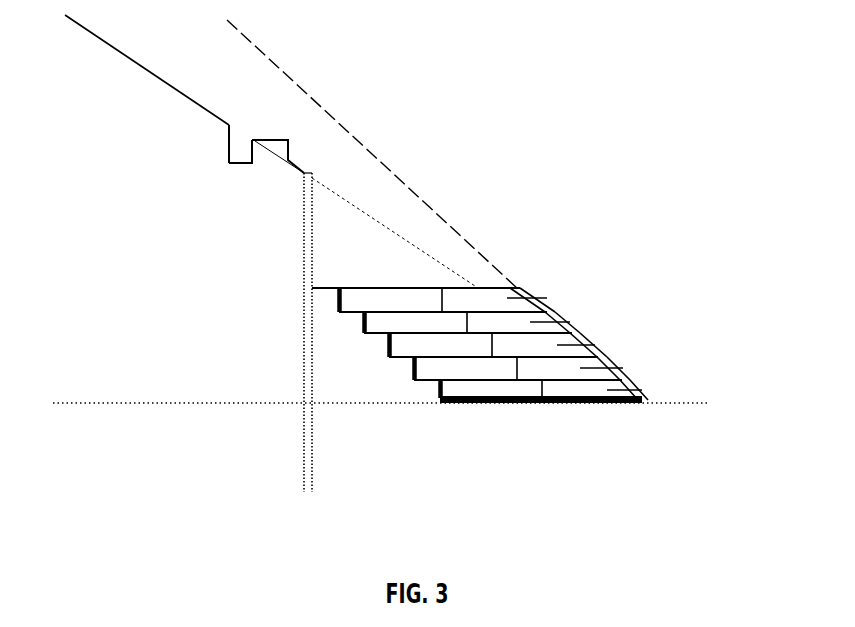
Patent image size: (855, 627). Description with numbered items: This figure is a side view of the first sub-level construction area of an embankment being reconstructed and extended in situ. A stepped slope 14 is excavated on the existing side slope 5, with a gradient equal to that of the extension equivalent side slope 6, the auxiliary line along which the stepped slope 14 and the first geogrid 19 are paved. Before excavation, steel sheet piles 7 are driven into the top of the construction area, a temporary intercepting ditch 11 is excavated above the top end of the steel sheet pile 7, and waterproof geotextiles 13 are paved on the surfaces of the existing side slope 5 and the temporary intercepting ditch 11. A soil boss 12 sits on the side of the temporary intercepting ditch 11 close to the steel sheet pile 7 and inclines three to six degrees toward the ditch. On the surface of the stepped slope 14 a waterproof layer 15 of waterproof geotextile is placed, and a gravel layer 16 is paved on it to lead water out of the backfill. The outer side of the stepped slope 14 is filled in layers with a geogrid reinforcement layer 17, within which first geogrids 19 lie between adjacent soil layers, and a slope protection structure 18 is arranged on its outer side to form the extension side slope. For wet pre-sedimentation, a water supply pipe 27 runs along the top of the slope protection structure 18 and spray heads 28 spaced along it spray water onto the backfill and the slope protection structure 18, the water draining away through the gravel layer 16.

The existing side slope 5 is at (152, 83).
The extension equivalent side slope 6 is at (300, 90).
The steel sheet pile 7 is at (305, 217).
The temporary intercepting ditch 11 is at (228, 165).
The soil boss 12 is at (278, 145).
The water-proof geotextile 13 is at (228, 138).
The stepped slope 14 is at (400, 370).
The waterproof layer 15 is at (465, 407).
The gravel layer 16 is at (550, 405).
The geogrid reinforcement layer 17 is at (491, 308).
The slope protection structure 18 is at (570, 322).
The first geogrid 19 is at (625, 373).
The water supply pipe 27 is at (520, 287).
The spray head 28 is at (508, 297).